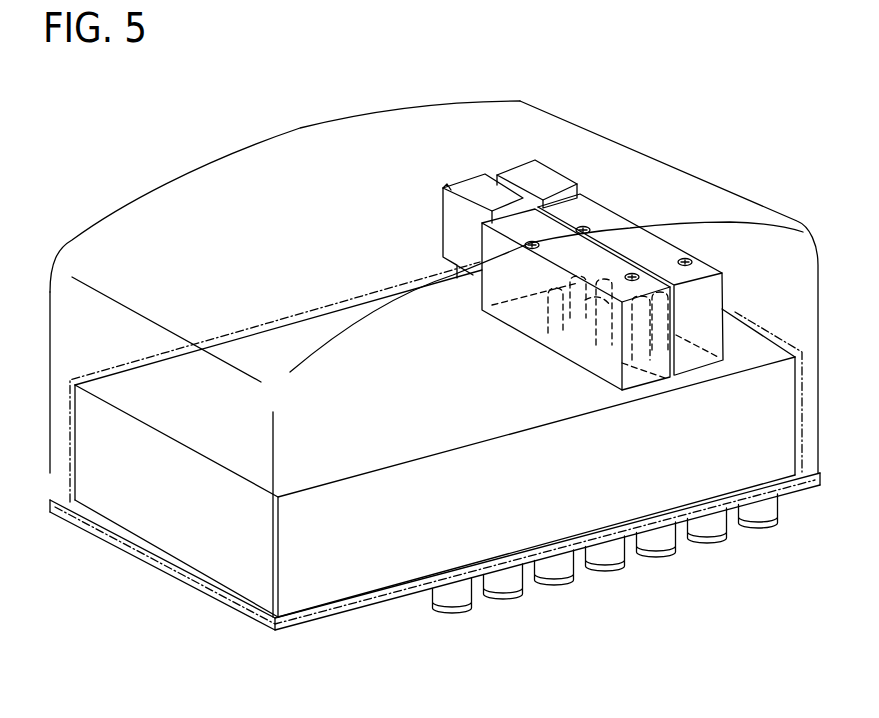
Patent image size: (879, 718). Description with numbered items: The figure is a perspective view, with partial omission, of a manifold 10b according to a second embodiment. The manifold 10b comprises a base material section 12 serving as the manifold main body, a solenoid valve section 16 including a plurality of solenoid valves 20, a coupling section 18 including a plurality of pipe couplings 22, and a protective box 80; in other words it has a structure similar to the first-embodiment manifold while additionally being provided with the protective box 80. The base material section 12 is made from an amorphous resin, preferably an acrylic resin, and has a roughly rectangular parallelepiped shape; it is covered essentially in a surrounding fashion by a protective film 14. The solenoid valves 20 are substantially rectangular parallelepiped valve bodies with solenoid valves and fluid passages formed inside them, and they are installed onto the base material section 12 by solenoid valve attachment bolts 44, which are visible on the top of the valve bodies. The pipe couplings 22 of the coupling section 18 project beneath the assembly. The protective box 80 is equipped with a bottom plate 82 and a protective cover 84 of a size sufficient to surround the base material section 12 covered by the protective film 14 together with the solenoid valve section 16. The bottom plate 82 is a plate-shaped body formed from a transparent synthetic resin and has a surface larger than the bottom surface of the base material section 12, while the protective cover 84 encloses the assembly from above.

The manifold 10b is at (331, 95).
The base material section 12 is at (435, 553).
The protective film 14 is at (250, 327).
The solenoid valve section 16 is at (652, 176).
The coupling section 18 is at (607, 564).
The solenoid valve 20 is at (617, 275).
The pipe coupling 22 is at (762, 510).
The solenoid valve attachment bolt 44 is at (693, 261).
The protective box 80 is at (430, 359).
The bottom plate 82 is at (110, 534).
The protective cover 84 is at (117, 243).